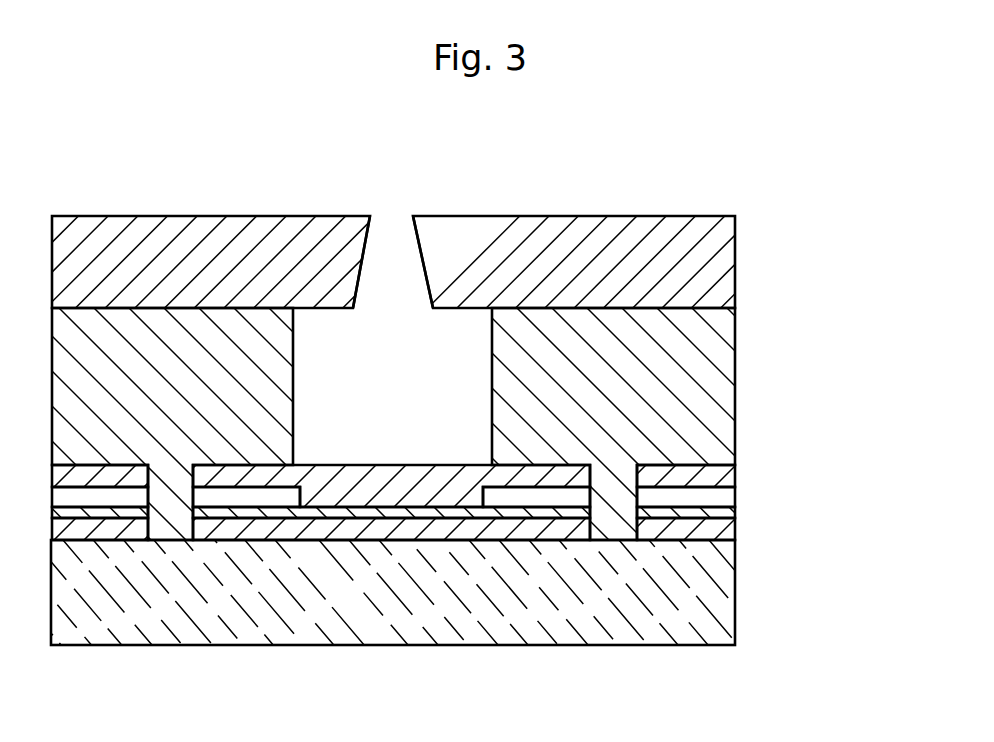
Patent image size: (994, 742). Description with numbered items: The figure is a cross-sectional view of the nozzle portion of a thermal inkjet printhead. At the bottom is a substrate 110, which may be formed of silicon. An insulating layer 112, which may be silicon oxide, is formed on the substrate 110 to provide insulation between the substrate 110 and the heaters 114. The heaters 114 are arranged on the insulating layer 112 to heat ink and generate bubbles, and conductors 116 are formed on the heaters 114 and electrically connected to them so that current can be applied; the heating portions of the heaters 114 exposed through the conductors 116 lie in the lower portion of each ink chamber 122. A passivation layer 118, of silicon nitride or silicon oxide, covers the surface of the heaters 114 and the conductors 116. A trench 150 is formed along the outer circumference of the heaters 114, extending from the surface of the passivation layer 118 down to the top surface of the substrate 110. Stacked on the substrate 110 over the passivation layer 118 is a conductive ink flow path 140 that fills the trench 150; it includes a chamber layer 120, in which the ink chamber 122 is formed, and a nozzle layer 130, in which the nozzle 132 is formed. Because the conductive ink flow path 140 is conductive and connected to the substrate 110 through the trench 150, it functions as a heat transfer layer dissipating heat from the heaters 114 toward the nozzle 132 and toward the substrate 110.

The substrate 110 is at (720, 598).
The insulating layer 112 is at (733, 537).
The heaters 114 is at (720, 513).
The conductors 116 is at (723, 498).
The passivation layer 118 is at (726, 476).
The chamber layer 120 is at (720, 390).
The ink chamber 122 is at (410, 397).
The nozzle layer 130 is at (718, 265).
The nozzle 132 is at (421, 262).
The conductive ink flow path 140 is at (479, 378).
The trench 150 is at (607, 527).